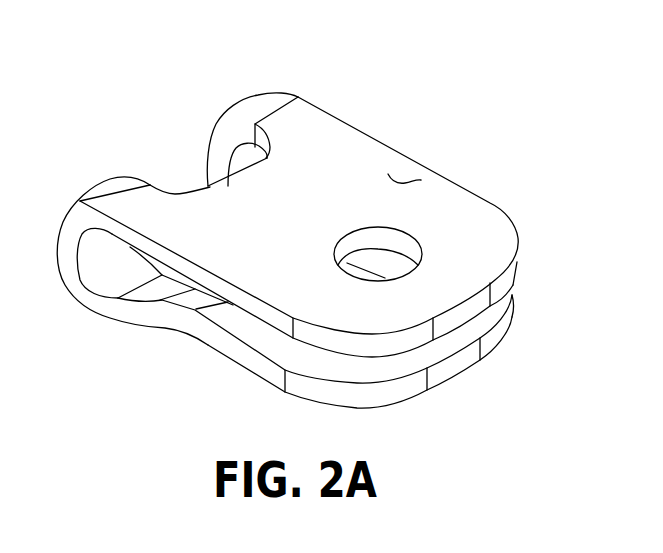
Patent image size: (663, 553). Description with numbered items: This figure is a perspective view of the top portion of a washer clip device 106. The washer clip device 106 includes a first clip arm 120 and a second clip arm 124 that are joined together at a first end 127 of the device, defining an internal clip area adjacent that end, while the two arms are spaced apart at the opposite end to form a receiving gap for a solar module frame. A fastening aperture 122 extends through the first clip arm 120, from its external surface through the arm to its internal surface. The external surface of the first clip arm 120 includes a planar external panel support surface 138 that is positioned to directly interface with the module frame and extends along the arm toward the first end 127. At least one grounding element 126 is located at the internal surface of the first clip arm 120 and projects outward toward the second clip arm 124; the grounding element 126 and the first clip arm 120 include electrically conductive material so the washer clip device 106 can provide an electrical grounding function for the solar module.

The washer clip device 106 is at (139, 73).
The first clip arm 120 is at (493, 203).
The fastening aperture 122 is at (335, 242).
The second clip arm 124 is at (252, 372).
The grounding element 126 is at (238, 325).
The first end 127 is at (207, 150).
The planar external panel support surface 138 is at (413, 180).